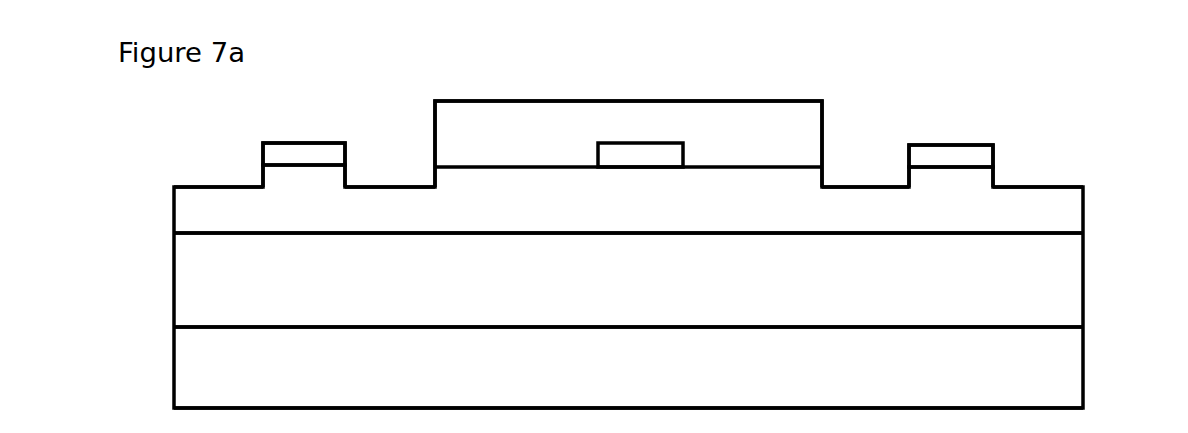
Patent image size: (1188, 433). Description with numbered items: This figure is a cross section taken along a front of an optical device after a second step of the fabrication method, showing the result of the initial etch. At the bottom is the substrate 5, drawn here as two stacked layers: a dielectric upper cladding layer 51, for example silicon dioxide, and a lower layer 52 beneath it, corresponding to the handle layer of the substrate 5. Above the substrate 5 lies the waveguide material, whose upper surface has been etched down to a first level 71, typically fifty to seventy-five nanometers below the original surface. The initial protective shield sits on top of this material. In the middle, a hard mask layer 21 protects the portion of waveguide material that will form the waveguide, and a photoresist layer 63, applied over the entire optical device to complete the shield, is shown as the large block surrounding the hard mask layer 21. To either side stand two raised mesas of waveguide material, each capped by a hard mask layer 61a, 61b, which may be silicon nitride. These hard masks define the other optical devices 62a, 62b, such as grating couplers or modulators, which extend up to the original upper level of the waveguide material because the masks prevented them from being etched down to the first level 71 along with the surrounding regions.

The substrate 5 is at (1120, 308).
The first level 71 is at (190, 185).
The dielectric upper cladding layer 51 is at (1014, 298).
The second substrate layer 52 is at (1014, 376).
The hard mask layer 61a is at (313, 148).
The other optical device 62a is at (335, 178).
The photoresist layer 63 is at (785, 125).
The hard mask layer 21 is at (653, 153).
The hard mask layer 61b is at (958, 152).
The other optical device 62b is at (982, 180).